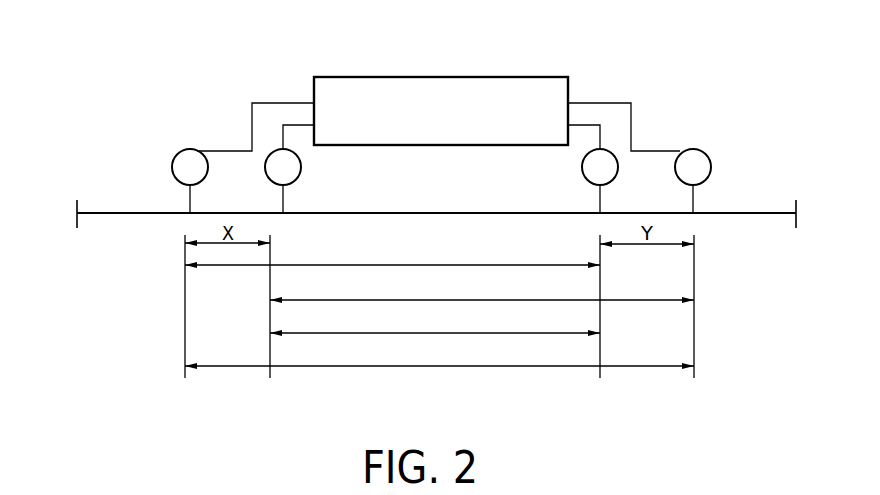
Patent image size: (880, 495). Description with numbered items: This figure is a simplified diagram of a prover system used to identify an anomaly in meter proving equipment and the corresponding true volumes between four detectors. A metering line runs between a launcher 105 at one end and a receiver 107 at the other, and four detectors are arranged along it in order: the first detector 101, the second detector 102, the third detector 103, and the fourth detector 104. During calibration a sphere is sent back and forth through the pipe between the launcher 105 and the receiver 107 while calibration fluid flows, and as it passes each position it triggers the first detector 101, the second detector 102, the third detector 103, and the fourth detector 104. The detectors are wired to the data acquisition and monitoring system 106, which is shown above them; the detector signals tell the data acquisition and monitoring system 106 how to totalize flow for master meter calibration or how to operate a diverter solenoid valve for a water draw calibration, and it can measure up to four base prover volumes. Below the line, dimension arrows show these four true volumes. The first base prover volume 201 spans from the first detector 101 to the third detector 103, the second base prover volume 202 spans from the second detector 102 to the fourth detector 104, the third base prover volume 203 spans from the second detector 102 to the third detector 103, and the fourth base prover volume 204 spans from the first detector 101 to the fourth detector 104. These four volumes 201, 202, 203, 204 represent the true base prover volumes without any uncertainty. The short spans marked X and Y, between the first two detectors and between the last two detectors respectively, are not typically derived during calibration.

The detector D1 101 is at (190, 149).
The detector D2 102 is at (301, 167).
The detector D3 103 is at (582, 167).
The detector D4 104 is at (693, 149).
The launcher 105 is at (77, 200).
The data acquisition and monitoring system (DAMS) 106 is at (442, 77).
The receiver 107 is at (796, 200).
The BPVA 201 is at (215, 266).
The BPVB 202 is at (640, 301).
The BPVC 203 is at (507, 334).
The BPVD 204 is at (640, 367).